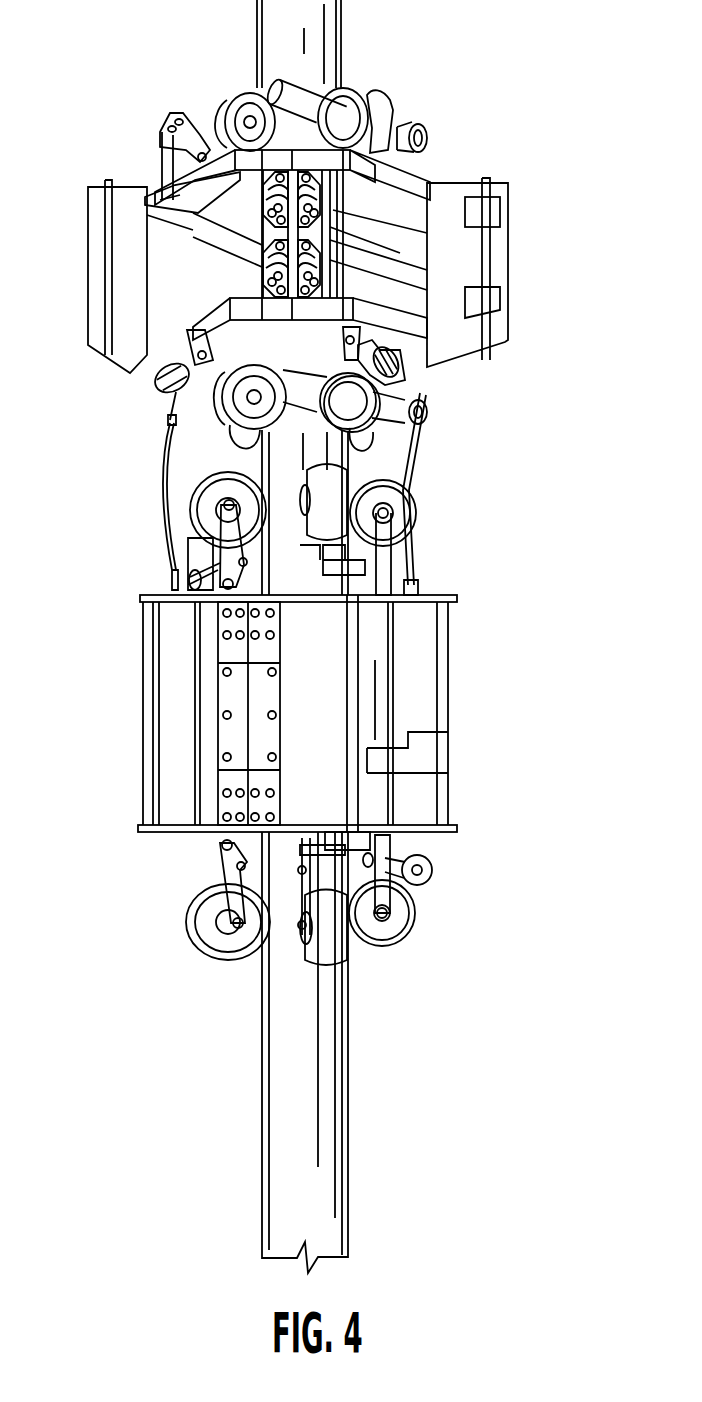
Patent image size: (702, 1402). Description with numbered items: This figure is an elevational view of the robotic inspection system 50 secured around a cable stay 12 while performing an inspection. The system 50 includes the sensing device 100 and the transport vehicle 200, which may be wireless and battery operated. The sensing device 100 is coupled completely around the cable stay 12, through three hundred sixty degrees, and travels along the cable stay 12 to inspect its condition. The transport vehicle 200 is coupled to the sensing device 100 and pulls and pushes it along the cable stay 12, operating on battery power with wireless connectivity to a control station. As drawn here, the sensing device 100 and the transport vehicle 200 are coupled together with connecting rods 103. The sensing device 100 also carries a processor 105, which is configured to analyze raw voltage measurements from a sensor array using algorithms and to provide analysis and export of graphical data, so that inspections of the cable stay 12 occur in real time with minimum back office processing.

The cable stay 12 is at (288, 1138).
The system 50 is at (334, 336).
The sensing device 100 is at (432, 683).
The connecting rods 103 is at (163, 448).
The processor 105 is at (460, 350).
The transport vehicle 200 is at (420, 184).